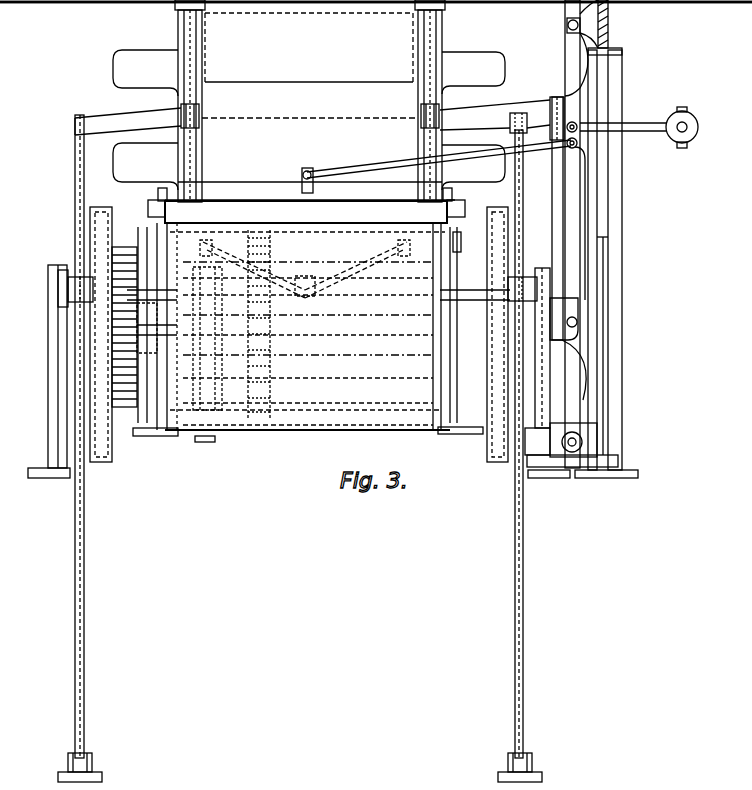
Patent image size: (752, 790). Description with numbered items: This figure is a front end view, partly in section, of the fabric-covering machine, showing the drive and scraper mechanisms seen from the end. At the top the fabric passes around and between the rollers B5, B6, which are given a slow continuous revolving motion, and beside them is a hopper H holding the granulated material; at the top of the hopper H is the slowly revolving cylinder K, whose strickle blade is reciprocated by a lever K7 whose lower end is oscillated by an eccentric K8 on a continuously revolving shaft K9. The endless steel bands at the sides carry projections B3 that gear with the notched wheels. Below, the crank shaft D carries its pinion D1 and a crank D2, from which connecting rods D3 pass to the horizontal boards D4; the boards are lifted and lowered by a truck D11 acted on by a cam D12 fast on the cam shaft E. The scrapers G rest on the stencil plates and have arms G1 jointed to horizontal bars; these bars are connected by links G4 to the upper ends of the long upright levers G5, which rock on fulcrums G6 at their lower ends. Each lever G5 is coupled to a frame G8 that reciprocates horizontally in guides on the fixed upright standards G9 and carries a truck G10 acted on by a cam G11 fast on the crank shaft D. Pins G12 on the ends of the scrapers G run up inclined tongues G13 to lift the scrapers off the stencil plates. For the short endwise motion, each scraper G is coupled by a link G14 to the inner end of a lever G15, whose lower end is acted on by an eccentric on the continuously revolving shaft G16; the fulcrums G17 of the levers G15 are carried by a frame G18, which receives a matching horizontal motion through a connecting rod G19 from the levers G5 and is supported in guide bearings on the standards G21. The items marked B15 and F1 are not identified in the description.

The hopper H is at (309, 47).
The roller B6 is at (182, 47).
The roller B5 is at (155, 166).
The projection B3 is at (466, 167).
The bar B15 is at (262, 427).
The scraper G is at (268, 172).
The arm G1 is at (208, 152).
The link G4 is at (180, 108).
The upright lever G5 is at (83, 703).
The fulcrum G6 is at (305, 767).
The frame G8 is at (65, 358).
The fixed upright standard G9 is at (45, 468).
The truck or roller G10 is at (92, 302).
The cam G11 is at (103, 462).
The pin G12 is at (134, 327).
The inclined tongue G13 is at (538, 113).
The link G14 is at (368, 150).
The lever G15 is at (572, 205).
The continuously revolving shaft G16 is at (590, 432).
The fulcrum G17 is at (578, 322).
The frame G18 is at (565, 345).
The connecting rod G19 is at (563, 202).
The standard G21 is at (618, 290).
The journal box F1 is at (158, 213).
The crank shaft D is at (140, 232).
The pinion D1 is at (187, 434).
The crank D2 is at (309, 292).
The connecting rod D3 is at (305, 269).
The horizontal board D4 is at (462, 236).
The truck D11 is at (210, 412).
The cam D12 is at (210, 438).
The cam shaft E is at (305, 415).
The cylinder K is at (566, 18).
The lever K7 is at (583, 57).
The eccentric K8 is at (686, 140).
The continuously revolving shaft K9 is at (683, 112).